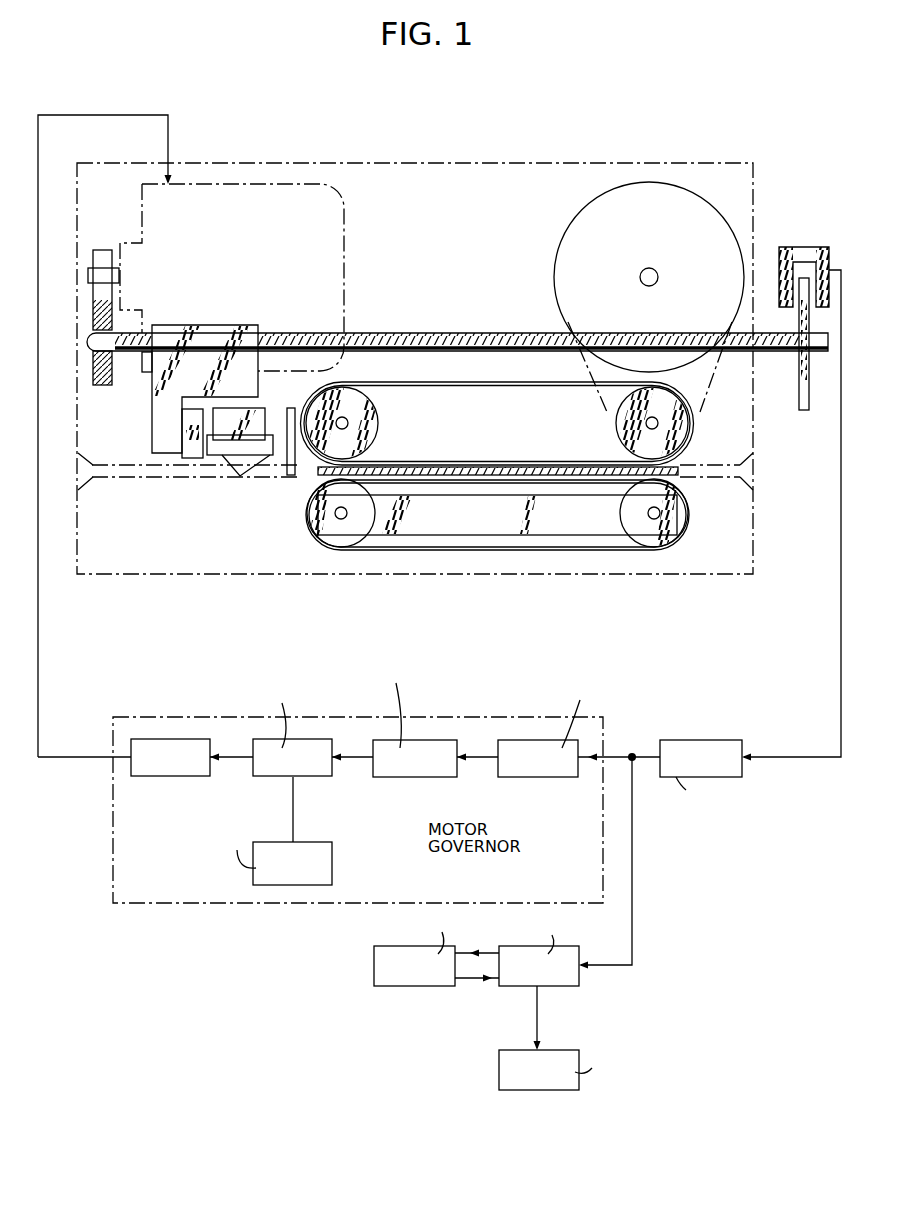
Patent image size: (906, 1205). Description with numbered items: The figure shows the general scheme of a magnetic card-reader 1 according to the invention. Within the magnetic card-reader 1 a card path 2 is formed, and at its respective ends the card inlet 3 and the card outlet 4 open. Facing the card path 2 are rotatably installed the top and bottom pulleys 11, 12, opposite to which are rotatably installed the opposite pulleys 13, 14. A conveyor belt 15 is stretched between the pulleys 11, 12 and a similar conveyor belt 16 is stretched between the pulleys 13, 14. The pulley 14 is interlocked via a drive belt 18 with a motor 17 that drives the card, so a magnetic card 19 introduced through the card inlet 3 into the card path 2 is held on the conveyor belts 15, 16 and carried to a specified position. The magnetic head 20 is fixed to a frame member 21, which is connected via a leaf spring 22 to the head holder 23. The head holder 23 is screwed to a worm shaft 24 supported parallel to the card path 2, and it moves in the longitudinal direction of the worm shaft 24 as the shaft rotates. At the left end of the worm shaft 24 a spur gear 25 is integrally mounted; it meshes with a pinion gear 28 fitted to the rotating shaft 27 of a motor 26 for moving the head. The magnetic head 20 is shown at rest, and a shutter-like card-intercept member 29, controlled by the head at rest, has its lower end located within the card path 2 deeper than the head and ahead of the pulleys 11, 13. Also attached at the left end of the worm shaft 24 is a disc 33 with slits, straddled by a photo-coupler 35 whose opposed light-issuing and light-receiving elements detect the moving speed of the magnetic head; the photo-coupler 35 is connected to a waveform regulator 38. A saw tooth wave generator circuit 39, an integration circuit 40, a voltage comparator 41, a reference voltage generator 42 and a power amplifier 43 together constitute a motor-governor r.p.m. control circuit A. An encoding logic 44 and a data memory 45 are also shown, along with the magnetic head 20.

The magnetic card-reader 1 is at (506, 160).
The card path 2 is at (165, 478).
The card inlet 3 is at (82, 472).
The card outlet 4 is at (750, 470).
The top pulley 11 is at (345, 542).
The bottom pulley 12 is at (660, 542).
The opposite pulley 13 is at (365, 420).
The opposite pulley 14 is at (630, 410).
The conveyor belt 15 is at (478, 550).
The conveyor belt 16 is at (447, 382).
The motor 17 is at (690, 185).
The drive belt 18 is at (718, 384).
The magnetic card 19 is at (587, 475).
The magnetic head 20 is at (258, 412).
The frame member 21 is at (235, 445).
The leaf spring 22 is at (215, 458).
The head holder 23 is at (155, 415).
The worm shaft 24 is at (392, 330).
The spur gear 25 is at (93, 372).
The motor for moving the head 26 is at (257, 182).
The rotating shaft 27 is at (88, 277).
The pinion gear 28 is at (100, 250).
The card-intercept member 29 is at (291, 475).
The disc 33 is at (806, 395).
The photo-coupler 35 is at (798, 262).
The waveform regulator 38 is at (696, 750).
The saw tooth wave generator circuit 39 is at (546, 748).
The integration circuit 40 is at (430, 748).
The voltage comparator 41 is at (322, 748).
The reference voltage generator 42 is at (315, 875).
The power amplifier 43 is at (170, 750).
The encoding logic 44 is at (565, 980).
The data memory 45 is at (414, 980).
The motor-governor r.p.m. control circuit A is at (140, 905).